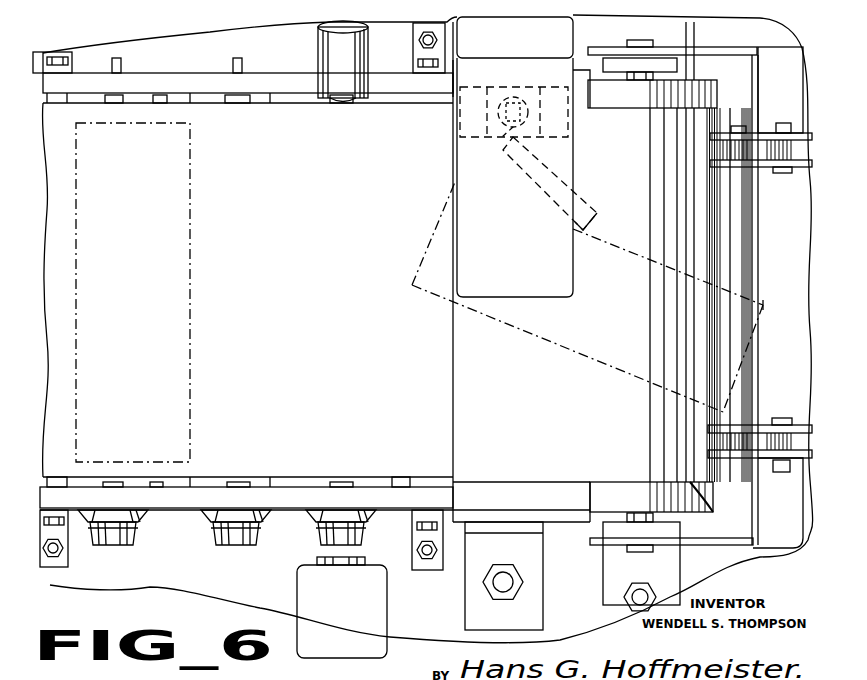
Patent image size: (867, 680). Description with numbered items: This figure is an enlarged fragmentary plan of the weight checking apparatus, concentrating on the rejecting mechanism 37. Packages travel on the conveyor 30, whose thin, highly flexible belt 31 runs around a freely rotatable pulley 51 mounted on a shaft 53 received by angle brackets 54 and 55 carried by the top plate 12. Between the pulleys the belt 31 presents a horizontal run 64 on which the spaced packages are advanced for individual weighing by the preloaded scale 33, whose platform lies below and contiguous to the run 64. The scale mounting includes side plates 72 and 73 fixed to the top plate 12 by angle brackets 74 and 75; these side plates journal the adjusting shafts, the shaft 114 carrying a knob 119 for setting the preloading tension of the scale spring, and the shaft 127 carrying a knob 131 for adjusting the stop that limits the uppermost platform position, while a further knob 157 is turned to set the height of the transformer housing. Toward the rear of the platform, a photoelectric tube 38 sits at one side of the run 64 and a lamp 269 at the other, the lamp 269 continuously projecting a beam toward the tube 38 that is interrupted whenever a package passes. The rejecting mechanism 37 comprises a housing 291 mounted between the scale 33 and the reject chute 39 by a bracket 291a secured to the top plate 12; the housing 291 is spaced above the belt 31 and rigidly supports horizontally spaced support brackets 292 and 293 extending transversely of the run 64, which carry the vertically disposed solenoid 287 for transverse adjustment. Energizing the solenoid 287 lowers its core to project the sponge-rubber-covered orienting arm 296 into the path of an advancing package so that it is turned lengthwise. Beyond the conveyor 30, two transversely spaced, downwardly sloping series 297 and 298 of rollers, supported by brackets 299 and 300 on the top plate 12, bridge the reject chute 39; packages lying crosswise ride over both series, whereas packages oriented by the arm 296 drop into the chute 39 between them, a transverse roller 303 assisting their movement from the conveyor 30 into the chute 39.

The top plate 12 is at (210, 33).
The angle bracket 74 is at (72, 38).
The horizontal shaft 114 is at (120, 62).
The horizontal shaft 127 is at (233, 67).
The side plate 73 is at (185, 85).
The photoelectric tube 38 is at (340, 52).
The angle bracket 75 is at (427, 52).
The bracket 291a is at (513, 47).
The housing 291 is at (530, 269).
The support bracket 292 is at (468, 137).
The support bracket 293 is at (553, 137).
The solenoid 287 is at (502, 137).
The orienting arm 296 is at (583, 213).
The rejecting mechanism 37 is at (455, 222).
The angle bracket 54 is at (658, 37).
The pulley 51 is at (677, 95).
The shaft 53 is at (643, 76).
The conveyor 30 is at (712, 345).
The belt 31 is at (657, 401).
The transverse roller 303 is at (738, 193).
The bracket 299 is at (802, 79).
The bracket 300 is at (802, 528).
The series of rollers 297 is at (737, 150).
The series of rollers 298 is at (737, 443).
The reject chute 39 is at (808, 270).
The angle bracket 55 is at (628, 568).
The horizontal run 64 is at (358, 328).
The side plate 72 is at (198, 495).
The scale 33 is at (172, 510).
The knob 119 is at (118, 534).
The knob 131 is at (233, 532).
The knob 157 is at (328, 533).
The lamp 269 is at (365, 617).